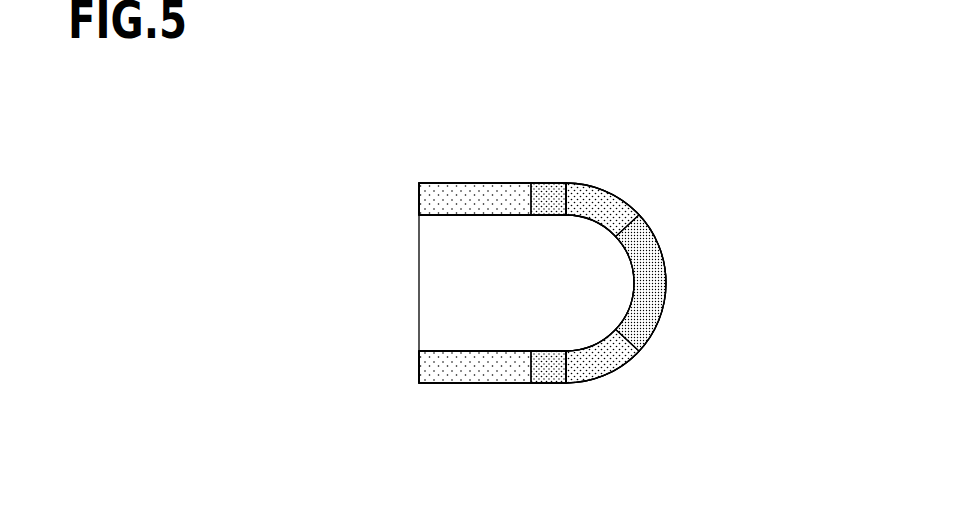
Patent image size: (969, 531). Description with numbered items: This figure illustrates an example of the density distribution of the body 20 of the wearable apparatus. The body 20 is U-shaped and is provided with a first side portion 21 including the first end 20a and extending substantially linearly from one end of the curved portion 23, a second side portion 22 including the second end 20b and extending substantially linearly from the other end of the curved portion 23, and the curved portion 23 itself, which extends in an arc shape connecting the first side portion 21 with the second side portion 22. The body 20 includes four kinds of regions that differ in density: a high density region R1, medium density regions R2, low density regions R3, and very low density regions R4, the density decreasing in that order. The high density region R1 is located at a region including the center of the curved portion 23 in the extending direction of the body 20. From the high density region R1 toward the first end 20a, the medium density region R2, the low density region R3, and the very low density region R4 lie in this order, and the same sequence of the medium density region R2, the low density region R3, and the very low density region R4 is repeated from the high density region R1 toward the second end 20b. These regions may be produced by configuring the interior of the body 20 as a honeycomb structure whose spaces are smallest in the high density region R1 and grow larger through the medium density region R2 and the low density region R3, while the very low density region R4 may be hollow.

The body 20 is at (747, 164).
The first end 20a is at (419, 367).
The second end 20b is at (419, 197).
The first side portion 21 is at (467, 351).
The second side portion 22 is at (473, 215).
The curved portion 23 is at (633, 283).
The high density region R1 is at (668, 283).
The medium density region R2 is at (609, 190).
The low density region R3 is at (545, 183).
The very low density region R4 is at (468, 183).